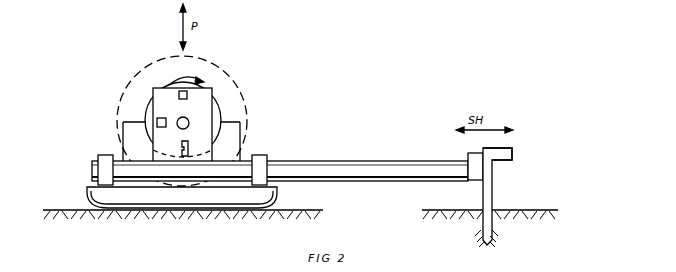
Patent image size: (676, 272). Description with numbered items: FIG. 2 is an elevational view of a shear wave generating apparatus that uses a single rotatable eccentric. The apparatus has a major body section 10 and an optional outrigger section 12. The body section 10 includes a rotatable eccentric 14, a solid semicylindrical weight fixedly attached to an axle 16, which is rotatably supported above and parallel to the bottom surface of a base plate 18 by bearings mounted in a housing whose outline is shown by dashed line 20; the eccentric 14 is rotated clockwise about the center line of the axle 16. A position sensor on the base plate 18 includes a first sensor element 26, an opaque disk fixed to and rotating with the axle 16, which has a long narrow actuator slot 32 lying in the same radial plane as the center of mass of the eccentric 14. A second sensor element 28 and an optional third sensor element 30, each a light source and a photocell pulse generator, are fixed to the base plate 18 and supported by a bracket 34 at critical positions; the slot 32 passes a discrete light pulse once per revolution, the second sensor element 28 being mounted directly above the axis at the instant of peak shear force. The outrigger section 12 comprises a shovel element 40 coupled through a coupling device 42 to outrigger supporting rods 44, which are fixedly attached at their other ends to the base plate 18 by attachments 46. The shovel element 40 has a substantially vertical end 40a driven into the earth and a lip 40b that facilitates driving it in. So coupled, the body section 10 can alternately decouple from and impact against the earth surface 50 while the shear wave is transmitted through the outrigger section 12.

The body section 10 is at (255, 86).
The outrigger section 12 is at (426, 143).
The rotatable eccentric 14 is at (244, 126).
The axle 16 is at (189, 121).
The base plate 18 is at (157, 198).
The housing outline 20 is at (227, 70).
The first sensor element 26 is at (130, 123).
The second sensor element 28 is at (170, 88).
The third sensor element 30 is at (157, 120).
The actuator slot 32 is at (181, 148).
The bracket 34 is at (198, 152).
The shovel element 40 is at (494, 186).
The vertically extending end 40a is at (478, 234).
The lip 40b is at (512, 152).
The coupling device 42 is at (468, 179).
The outrigger supporting rod 44 is at (92, 170).
The attachment 46 is at (103, 158).
The earth surface 50 is at (302, 209).